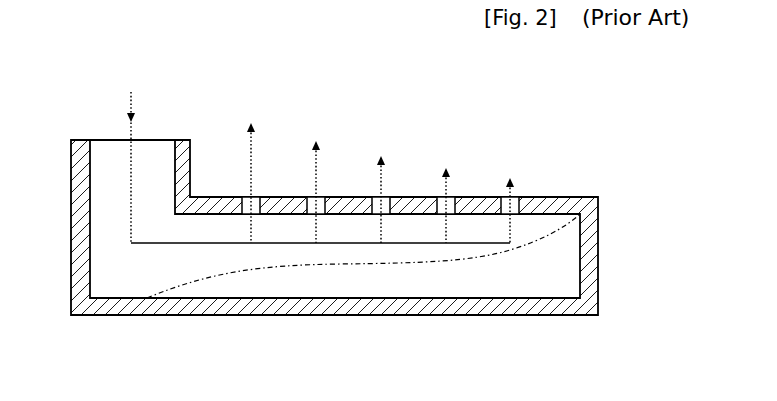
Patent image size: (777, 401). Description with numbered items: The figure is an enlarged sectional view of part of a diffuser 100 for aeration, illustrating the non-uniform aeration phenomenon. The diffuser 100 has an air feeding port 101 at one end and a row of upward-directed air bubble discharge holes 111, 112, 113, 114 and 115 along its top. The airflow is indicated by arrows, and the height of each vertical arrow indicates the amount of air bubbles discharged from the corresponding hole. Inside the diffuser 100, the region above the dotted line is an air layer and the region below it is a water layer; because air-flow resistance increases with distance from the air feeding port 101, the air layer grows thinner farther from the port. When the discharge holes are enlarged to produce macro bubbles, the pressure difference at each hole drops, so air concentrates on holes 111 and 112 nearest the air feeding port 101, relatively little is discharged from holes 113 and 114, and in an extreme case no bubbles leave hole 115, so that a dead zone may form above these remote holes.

The diffuser for aeration 100 is at (323, 315).
The air feeding port 101 is at (153, 152).
The air bubble discharge hole 111 is at (248, 197).
The air bubble discharge hole 112 is at (312, 197).
The air bubble discharge hole 113 is at (375, 197).
The air bubble discharge hole 114 is at (440, 197).
The air bubble discharge hole 115 is at (515, 197).